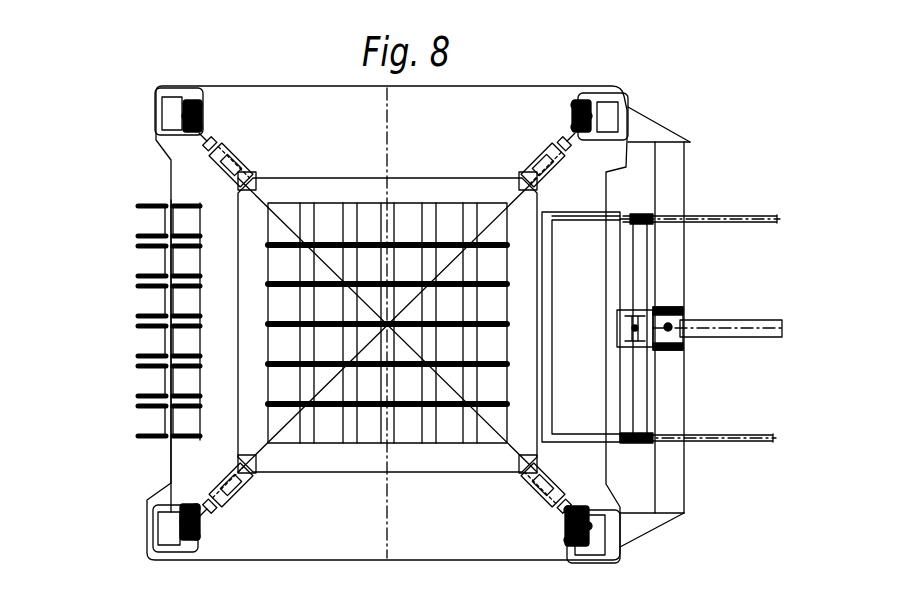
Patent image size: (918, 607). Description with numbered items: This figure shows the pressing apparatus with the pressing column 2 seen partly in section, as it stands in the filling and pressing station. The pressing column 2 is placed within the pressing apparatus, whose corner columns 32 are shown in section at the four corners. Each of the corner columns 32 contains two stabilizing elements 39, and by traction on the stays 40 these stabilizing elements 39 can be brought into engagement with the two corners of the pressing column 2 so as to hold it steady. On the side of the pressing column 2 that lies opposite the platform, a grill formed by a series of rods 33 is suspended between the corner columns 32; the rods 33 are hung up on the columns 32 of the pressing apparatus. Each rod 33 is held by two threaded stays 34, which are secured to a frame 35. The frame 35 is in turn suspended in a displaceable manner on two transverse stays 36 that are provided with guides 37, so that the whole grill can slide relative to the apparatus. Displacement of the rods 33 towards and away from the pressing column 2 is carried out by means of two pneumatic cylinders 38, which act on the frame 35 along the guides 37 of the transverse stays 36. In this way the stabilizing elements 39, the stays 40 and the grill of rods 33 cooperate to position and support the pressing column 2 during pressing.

The pressing column 2 is at (425, 473).
The corner columns 32 is at (628, 98).
The rods 33 is at (558, 317).
The threaded stays 34 is at (582, 222).
The frame 35 is at (633, 395).
The transverse stays 36 is at (670, 267).
The guides 37 is at (712, 217).
The pneumatic cylinders 38 is at (733, 318).
The stabilizing elements 39 is at (232, 135).
The stays 40 is at (186, 104).